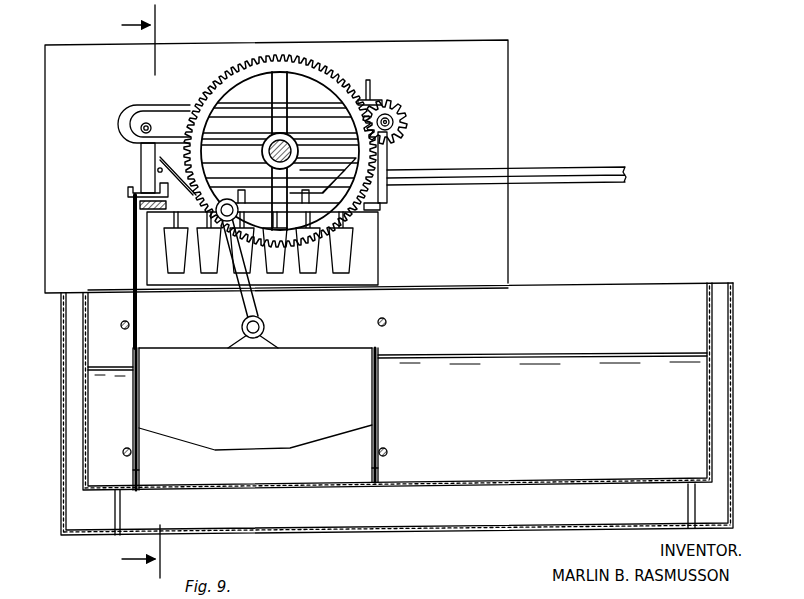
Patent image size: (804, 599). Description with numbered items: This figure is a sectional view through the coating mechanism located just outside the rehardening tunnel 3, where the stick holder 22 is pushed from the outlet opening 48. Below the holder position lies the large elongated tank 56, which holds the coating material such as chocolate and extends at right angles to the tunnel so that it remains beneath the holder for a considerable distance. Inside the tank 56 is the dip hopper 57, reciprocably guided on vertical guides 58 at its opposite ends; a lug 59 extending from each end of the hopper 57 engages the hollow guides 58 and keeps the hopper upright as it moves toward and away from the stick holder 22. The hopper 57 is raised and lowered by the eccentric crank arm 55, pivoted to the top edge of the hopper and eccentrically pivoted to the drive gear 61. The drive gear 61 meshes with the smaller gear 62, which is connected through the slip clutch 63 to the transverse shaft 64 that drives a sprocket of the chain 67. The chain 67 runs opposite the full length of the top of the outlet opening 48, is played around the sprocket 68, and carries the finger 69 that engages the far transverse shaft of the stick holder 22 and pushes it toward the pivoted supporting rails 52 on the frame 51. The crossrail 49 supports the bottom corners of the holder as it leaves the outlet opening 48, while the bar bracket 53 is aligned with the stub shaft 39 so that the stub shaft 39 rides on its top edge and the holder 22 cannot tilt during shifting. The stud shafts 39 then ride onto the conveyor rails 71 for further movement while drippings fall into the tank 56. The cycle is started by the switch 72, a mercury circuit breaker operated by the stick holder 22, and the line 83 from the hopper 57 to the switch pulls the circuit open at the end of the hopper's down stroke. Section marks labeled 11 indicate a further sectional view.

The rehardening tunnel 3 is at (505, 66).
The section line 11 is at (153, 291).
The stick holder 22 is at (152, 176).
The stub shaft 39 is at (157, 170).
The outlet opening 48 is at (152, 270).
The crossrail 49 is at (148, 207).
The frame 51 is at (388, 205).
The pivoted supporting rails 52 is at (372, 211).
The bar bracket 53 is at (318, 176).
The eccentric crank arm 55 is at (259, 297).
The tank 56 is at (654, 292).
The dip hopper 57 is at (255, 391).
The vertical guides 58 is at (139, 473).
The lug 59 is at (133, 412).
The drive gear 61 is at (284, 60).
The smaller gear 62 is at (403, 113).
The slip clutch 63 is at (392, 108).
The transverse shaft 64 is at (393, 122).
The chain 67 is at (184, 106).
The sprocket 68 is at (146, 113).
The finger 69 is at (368, 80).
The conveyor rails 71 is at (569, 170).
The switch 72 is at (128, 198).
The line 83 is at (133, 247).